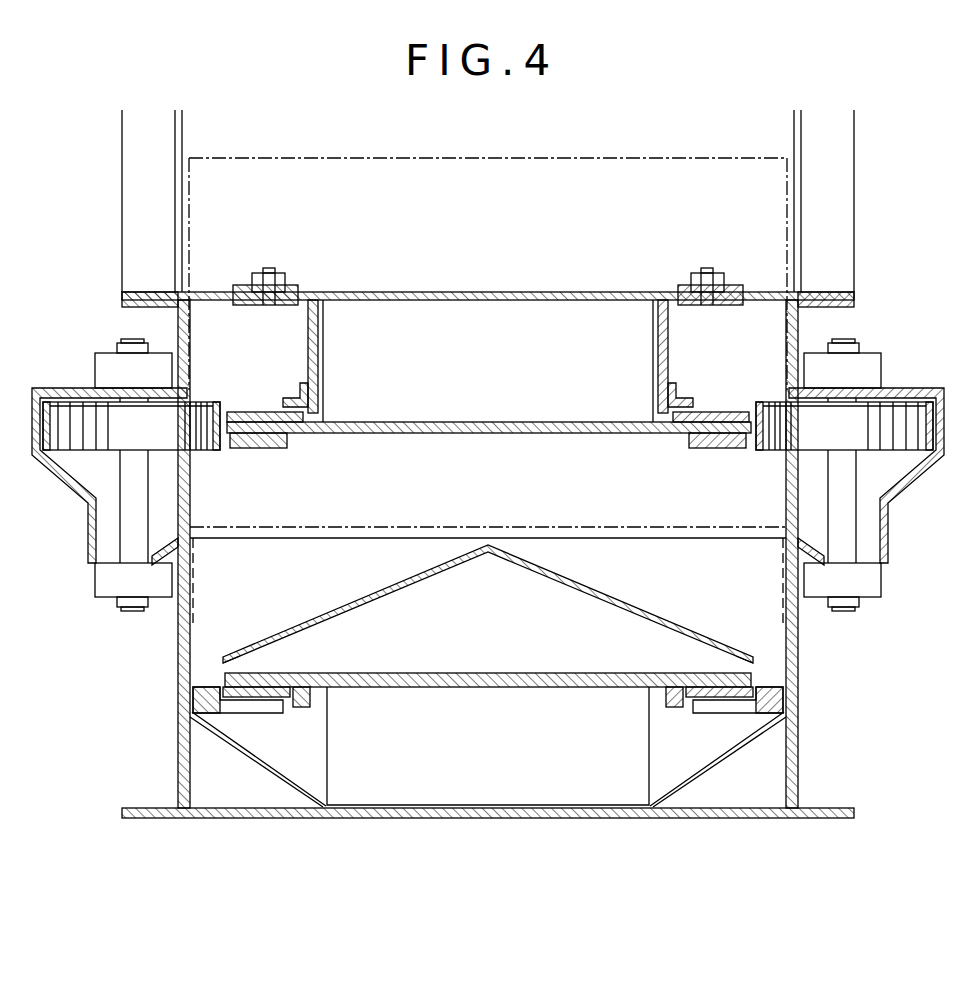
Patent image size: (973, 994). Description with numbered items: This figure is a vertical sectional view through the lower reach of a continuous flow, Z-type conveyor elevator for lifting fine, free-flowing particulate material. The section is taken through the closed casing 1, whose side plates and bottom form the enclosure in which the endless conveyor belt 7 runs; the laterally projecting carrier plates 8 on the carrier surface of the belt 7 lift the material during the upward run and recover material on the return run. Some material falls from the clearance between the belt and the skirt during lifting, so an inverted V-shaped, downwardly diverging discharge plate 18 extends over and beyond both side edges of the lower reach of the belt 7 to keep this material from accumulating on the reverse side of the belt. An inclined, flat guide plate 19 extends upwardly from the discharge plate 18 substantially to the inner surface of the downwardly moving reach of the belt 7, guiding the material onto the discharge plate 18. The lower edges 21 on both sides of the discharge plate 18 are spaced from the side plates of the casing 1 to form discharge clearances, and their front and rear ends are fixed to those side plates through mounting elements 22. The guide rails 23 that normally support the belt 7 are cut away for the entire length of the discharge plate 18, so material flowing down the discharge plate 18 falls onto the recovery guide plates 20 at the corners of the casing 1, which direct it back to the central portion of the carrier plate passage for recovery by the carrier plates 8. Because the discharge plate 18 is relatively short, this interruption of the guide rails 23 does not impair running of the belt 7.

The closed casing 1 is at (176, 212).
The endless conveyor belt 7 is at (462, 422).
The carrier plates 8 is at (563, 327).
The discharge plate 18 is at (540, 570).
The guide plate 19 is at (647, 170).
The recovery guide plates 20 is at (250, 765).
The lower edges 21 is at (233, 655).
The mounting elements 22 is at (232, 624).
The guide rails 23 is at (255, 450).